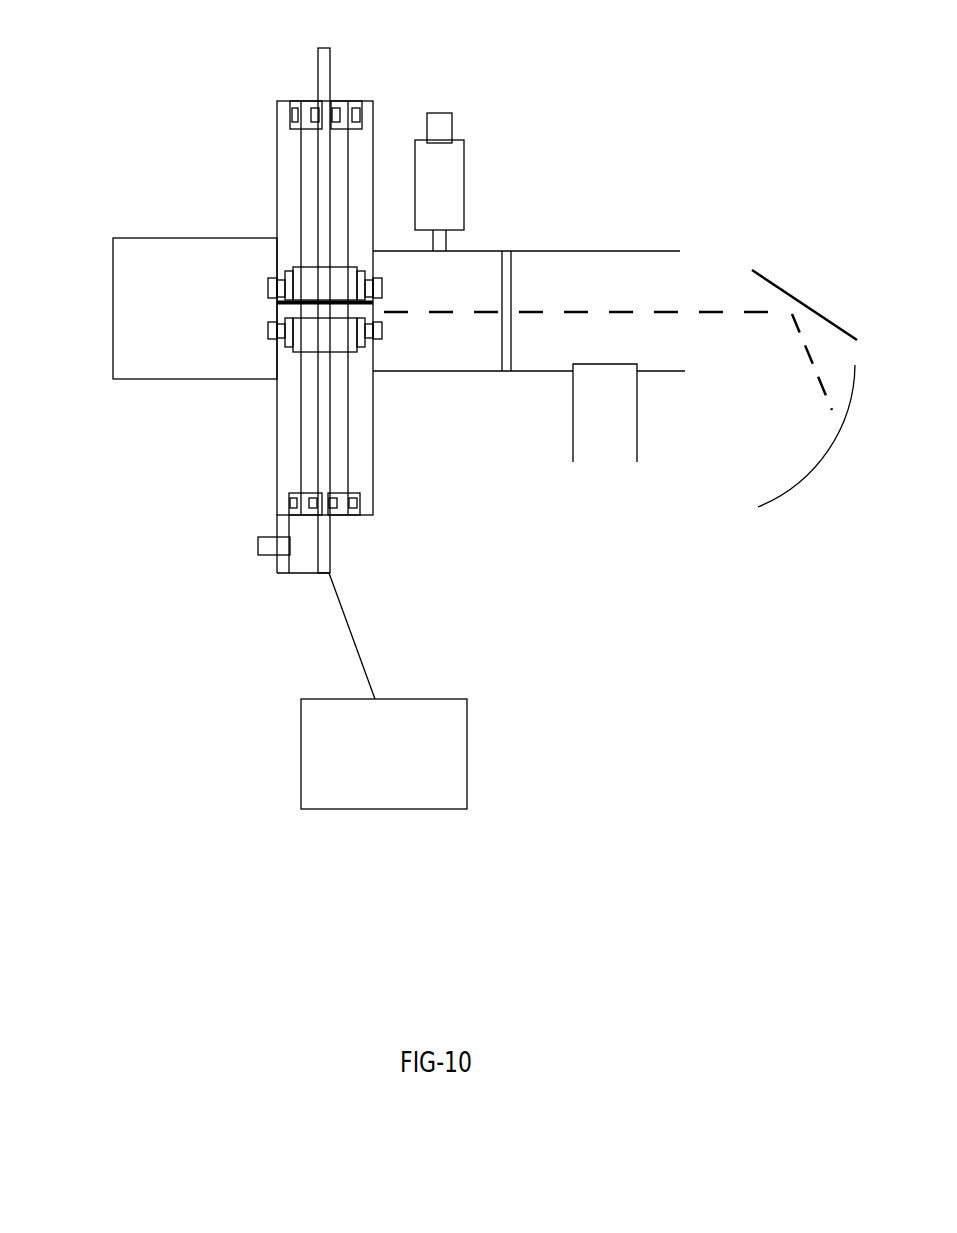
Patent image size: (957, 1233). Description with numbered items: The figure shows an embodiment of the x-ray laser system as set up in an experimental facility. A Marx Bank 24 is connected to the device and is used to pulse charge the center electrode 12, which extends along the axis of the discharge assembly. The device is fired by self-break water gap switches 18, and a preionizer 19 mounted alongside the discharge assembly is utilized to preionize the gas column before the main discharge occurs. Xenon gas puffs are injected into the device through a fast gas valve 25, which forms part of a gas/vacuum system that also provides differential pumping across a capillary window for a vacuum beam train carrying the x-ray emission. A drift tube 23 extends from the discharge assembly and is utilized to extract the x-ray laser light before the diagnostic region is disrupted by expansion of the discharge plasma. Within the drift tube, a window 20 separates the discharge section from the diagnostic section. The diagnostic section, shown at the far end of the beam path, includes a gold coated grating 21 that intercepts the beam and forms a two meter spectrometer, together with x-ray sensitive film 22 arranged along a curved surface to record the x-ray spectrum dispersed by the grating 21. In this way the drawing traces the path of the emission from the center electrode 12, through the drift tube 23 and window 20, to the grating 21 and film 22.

The center electrode 12 is at (320, 72).
The self-break water gap switches 18 is at (338, 507).
The preionizer 19 is at (138, 280).
The window 20 is at (508, 368).
The grating 21 is at (777, 285).
The x-ray sensitive film 22 is at (805, 487).
The drift tube 23 is at (593, 265).
The Marx Bank 24 is at (315, 737).
The fast gas valve 25 is at (452, 174).